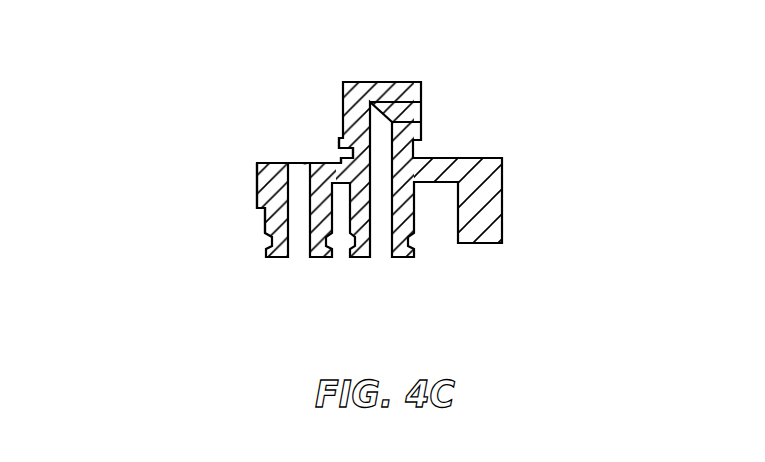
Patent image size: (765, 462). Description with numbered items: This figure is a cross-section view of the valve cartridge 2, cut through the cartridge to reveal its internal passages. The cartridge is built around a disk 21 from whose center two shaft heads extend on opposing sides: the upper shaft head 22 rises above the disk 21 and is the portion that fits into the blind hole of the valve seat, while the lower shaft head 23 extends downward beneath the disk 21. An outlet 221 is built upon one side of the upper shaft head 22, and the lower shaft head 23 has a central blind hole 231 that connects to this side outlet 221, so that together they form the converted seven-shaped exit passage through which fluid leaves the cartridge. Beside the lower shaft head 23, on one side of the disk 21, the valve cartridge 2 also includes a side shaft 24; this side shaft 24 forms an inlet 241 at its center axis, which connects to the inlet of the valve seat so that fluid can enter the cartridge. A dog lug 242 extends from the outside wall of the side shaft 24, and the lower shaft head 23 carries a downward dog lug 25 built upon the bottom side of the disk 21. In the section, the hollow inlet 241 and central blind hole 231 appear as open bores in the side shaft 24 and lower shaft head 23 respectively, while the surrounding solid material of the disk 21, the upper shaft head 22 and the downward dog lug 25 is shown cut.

The valve cartridge 2 is at (256, 162).
The disk 21 is at (336, 161).
The upper shaft head 22 is at (351, 83).
The outlet 221 is at (418, 107).
The lower shaft head 23 is at (415, 225).
The central blind hole 231 is at (378, 247).
The side shaft 24 is at (272, 222).
The inlet 241 is at (300, 247).
The dog lug 242 is at (257, 204).
The downward dog lug 25 is at (490, 215).